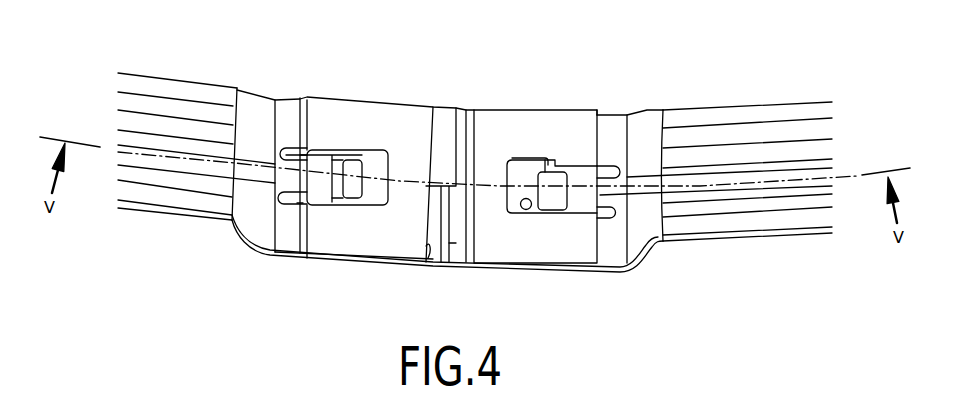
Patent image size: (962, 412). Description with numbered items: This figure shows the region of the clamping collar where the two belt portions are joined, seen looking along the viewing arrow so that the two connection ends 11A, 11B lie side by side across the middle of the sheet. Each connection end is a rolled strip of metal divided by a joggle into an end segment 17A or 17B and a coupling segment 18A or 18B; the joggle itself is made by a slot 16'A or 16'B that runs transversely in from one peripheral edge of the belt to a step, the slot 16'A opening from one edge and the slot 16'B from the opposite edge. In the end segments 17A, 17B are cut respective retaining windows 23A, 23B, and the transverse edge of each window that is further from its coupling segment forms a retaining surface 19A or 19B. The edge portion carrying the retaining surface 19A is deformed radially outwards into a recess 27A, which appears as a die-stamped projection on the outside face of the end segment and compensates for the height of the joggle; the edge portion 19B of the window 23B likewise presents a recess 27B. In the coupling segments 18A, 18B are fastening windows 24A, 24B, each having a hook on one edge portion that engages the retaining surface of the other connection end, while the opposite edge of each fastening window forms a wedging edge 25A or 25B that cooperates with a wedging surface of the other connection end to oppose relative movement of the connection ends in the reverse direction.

The connection end 11A is at (598, 91).
The connection end 11B is at (315, 84).
The slot 16'A is at (406, 277).
The slot 16'B is at (500, 161).
The end segment 17A is at (372, 120).
The end segment 17B is at (534, 120).
The coupling segment 18A is at (612, 118).
The coupling segment 18B is at (280, 227).
The retaining surface 19A is at (300, 205).
The retaining surface 19B is at (545, 160).
The retaining window 23A is at (366, 195).
The retaining window 23B is at (523, 210).
The fastening window 24A is at (600, 217).
The fastening window 24B is at (282, 194).
The wedging edge 25A is at (600, 198).
The wedging edge 25B is at (293, 170).
The recess 27A is at (316, 165).
The recess 27B is at (575, 194).